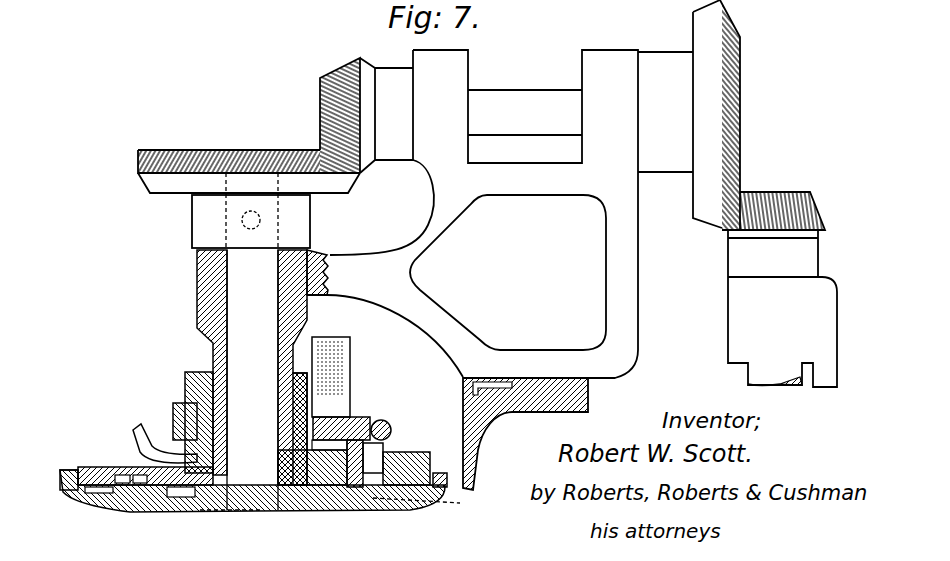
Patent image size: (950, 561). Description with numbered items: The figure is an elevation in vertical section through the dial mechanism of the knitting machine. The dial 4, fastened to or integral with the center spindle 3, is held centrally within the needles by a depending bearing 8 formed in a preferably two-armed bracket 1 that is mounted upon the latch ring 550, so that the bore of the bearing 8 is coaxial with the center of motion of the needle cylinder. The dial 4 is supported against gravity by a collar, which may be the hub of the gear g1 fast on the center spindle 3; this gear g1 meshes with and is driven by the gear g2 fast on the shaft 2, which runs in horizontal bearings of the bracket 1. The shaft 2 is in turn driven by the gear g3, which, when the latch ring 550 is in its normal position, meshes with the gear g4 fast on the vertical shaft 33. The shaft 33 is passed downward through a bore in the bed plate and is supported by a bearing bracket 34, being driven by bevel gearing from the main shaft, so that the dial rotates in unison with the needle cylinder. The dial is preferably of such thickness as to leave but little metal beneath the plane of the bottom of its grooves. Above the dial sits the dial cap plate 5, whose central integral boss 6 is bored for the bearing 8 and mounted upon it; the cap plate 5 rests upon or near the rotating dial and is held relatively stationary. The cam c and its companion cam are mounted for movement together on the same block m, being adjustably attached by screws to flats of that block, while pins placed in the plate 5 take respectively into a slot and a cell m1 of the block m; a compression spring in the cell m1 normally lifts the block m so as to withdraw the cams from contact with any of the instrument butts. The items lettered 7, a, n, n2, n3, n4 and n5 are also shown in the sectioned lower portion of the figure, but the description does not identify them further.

The bracket 1 is at (432, 238).
The shaft 2 is at (515, 92).
The center spindle 3 is at (251, 341).
The dial 4 is at (195, 510).
The dial cap plate 5 is at (105, 467).
The central integral boss 6 is at (203, 372).
The spring hook 7 is at (150, 432).
The depending bearing 8 is at (197, 301).
The vertical shaft 33 is at (748, 383).
The bearing bracket 34 is at (782, 308).
The latch ring 550 is at (590, 385).
The gear g1 is at (196, 150).
The gear g2 is at (320, 90).
The gear g3 is at (742, 58).
The gear g4 is at (812, 200).
The block m is at (348, 418).
The cell m1 is at (352, 364).
The pivot pin a is at (381, 430).
The cam c is at (393, 446).
The pin n is at (363, 493).
The pin n2 is at (97, 490).
The pin n3 is at (72, 492).
The pin n4 is at (428, 497).
The pin n5 is at (70, 470).